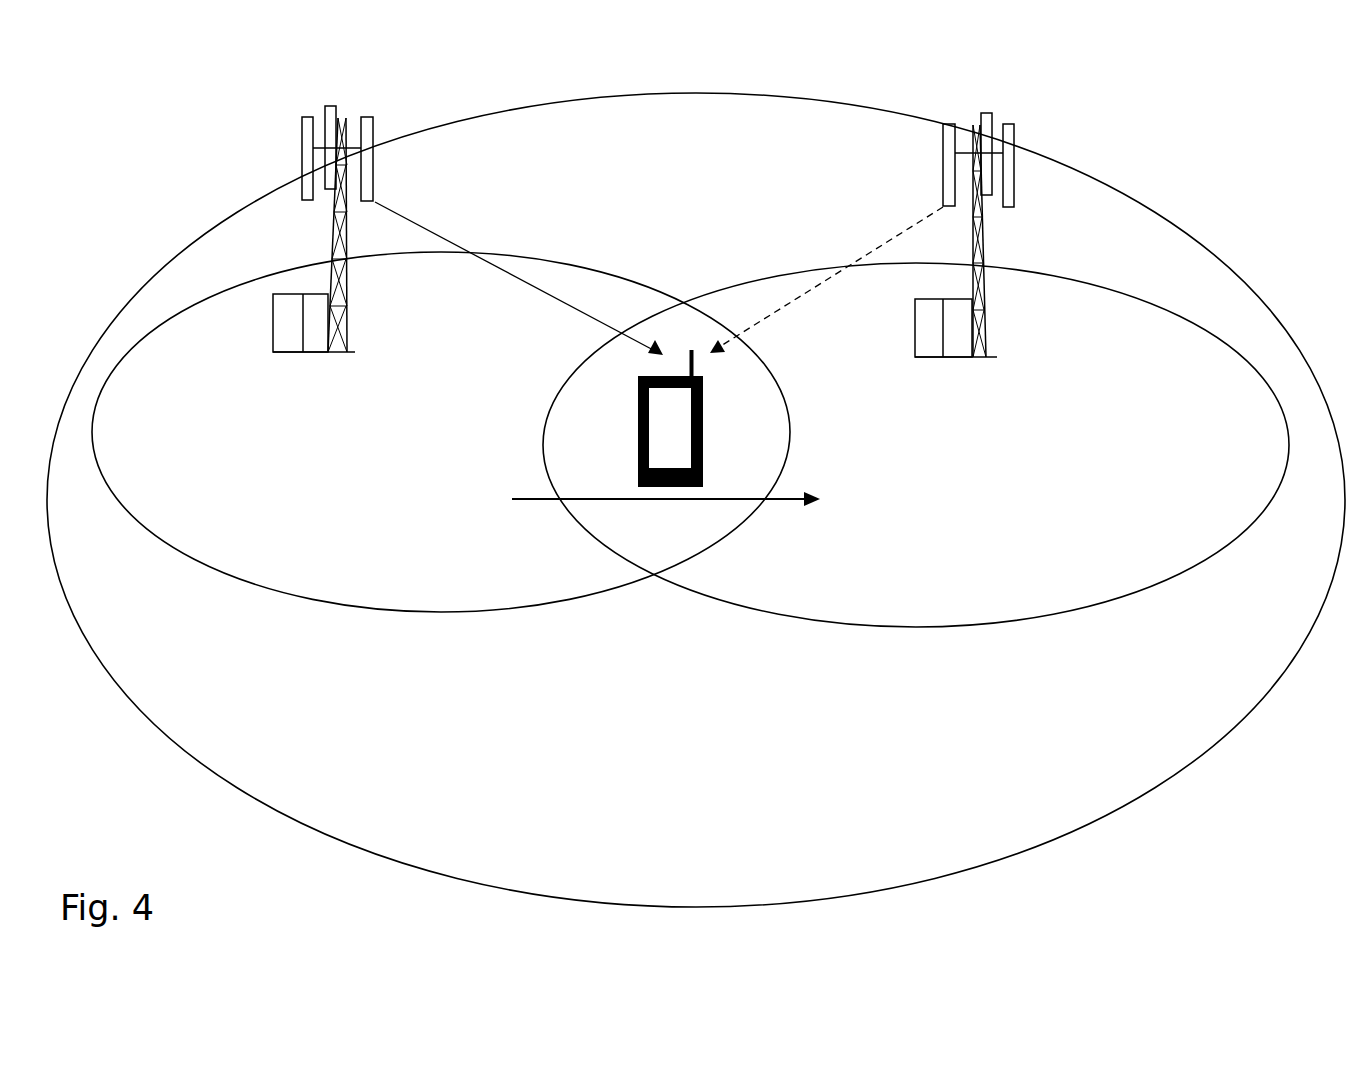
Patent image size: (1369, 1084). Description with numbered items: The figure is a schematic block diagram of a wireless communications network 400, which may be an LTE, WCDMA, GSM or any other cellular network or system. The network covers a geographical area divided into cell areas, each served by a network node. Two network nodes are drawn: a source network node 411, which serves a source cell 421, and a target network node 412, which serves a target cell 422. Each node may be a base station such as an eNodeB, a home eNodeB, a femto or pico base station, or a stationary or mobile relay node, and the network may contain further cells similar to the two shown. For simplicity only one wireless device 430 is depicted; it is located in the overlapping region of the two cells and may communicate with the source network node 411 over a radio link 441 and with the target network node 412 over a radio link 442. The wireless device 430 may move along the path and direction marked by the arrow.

The wireless communications network 400 is at (1058, 845).
The source network node 411 is at (340, 317).
The target network node 412 is at (985, 320).
The source cell 421 is at (243, 580).
The target cell 422 is at (1143, 597).
The wireless device 430 is at (632, 464).
The radio link 441 is at (533, 284).
The radio link 442 is at (800, 299).